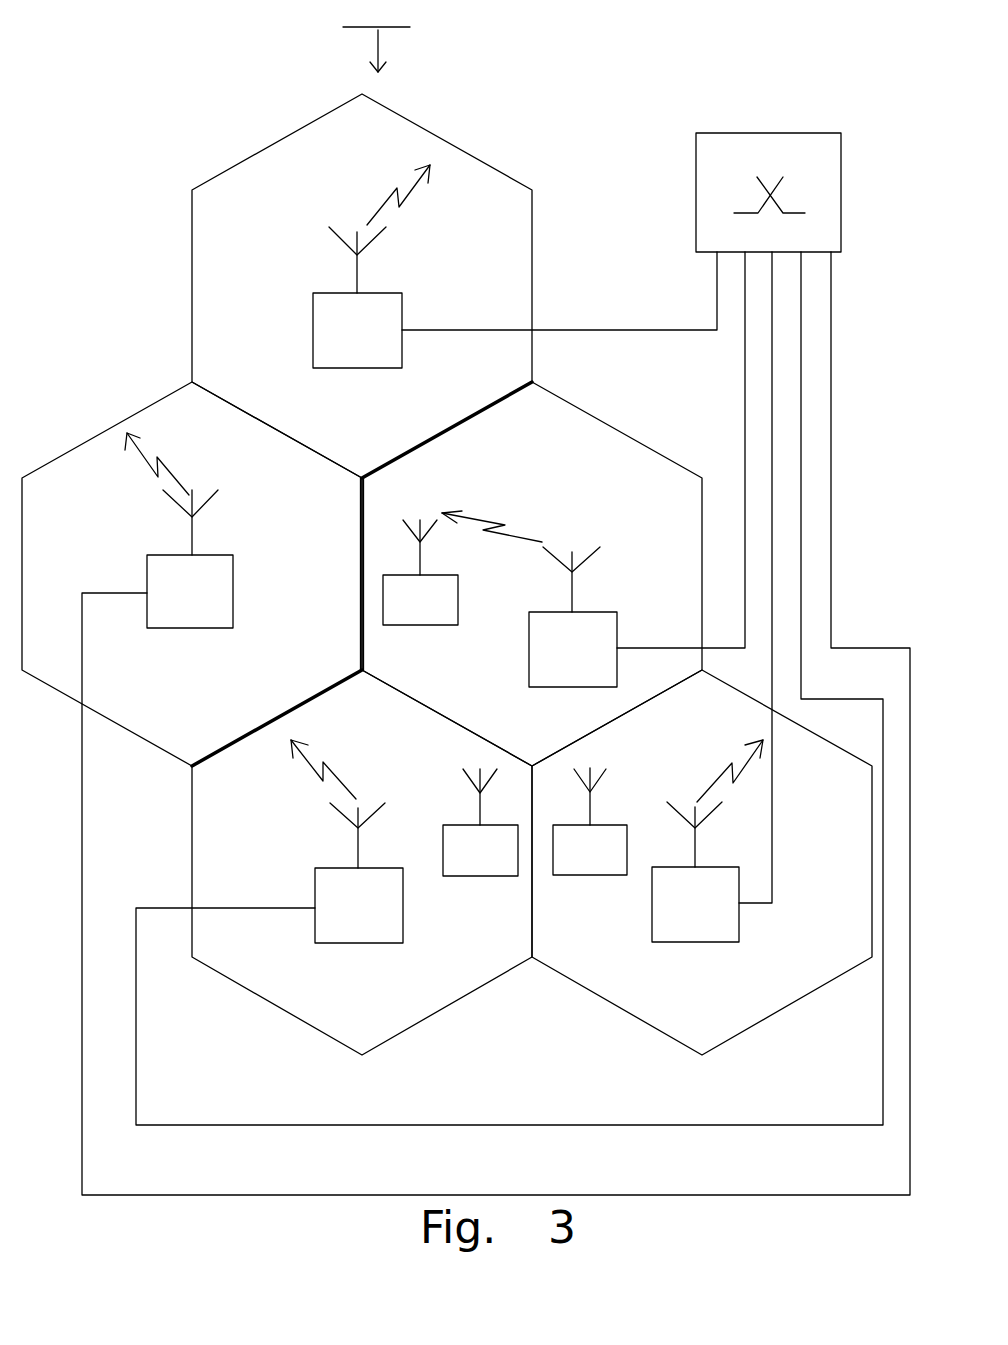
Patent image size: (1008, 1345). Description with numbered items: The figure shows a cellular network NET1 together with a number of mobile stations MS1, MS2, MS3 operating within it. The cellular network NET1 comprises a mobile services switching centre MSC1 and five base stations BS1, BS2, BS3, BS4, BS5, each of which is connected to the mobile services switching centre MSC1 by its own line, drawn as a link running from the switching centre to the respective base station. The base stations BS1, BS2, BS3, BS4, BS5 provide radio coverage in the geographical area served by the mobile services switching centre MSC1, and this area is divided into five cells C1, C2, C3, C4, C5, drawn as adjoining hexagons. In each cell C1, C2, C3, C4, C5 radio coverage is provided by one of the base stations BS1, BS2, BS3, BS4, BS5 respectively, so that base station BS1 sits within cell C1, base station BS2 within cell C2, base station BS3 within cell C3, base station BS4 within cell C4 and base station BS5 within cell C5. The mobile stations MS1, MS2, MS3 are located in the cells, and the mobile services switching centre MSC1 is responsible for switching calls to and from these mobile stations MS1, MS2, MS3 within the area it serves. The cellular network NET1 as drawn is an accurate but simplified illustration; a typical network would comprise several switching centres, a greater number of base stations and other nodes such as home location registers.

The cellular network NET1 is at (376, 37).
The mobile services switching centre MSC1 is at (750, 132).
The cell C1 is at (688, 469).
The cell C2 is at (773, 1014).
The cell C3 is at (255, 993).
The cell C4 is at (132, 420).
The cell C5 is at (486, 164).
The base station BS1 is at (563, 687).
The base station BS2 is at (690, 942).
The base station BS3 is at (348, 943).
The base station BS4 is at (183, 628).
The base station BS5 is at (353, 368).
The mobile station MS1 is at (420, 625).
The mobile station MS2 is at (590, 875).
The mobile station MS3 is at (480, 876).